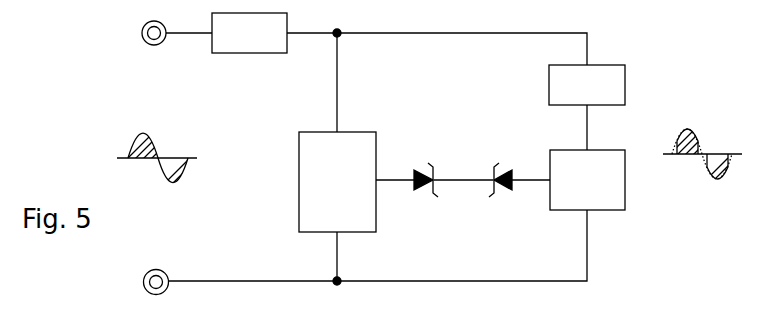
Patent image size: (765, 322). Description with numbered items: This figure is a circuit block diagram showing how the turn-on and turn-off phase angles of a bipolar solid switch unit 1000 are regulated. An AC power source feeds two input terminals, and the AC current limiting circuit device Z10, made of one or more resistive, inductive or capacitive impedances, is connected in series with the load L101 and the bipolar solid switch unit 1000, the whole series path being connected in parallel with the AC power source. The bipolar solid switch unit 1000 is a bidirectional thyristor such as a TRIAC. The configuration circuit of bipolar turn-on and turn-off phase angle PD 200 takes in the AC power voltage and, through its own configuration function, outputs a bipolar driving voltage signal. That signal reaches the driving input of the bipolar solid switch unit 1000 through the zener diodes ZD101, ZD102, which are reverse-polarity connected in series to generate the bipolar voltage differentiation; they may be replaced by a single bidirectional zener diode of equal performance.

The AC current limiting circuit device Z10 is at (249, 33).
The load L101 is at (587, 85).
The bipolar solid switch unit 1000 is at (587, 180).
The configuration circuit of bipolar turn-on and turn-off phase angle 200 is at (337, 182).
The zener diode ZD101 is at (420, 170).
The zener diode ZD102 is at (502, 196).